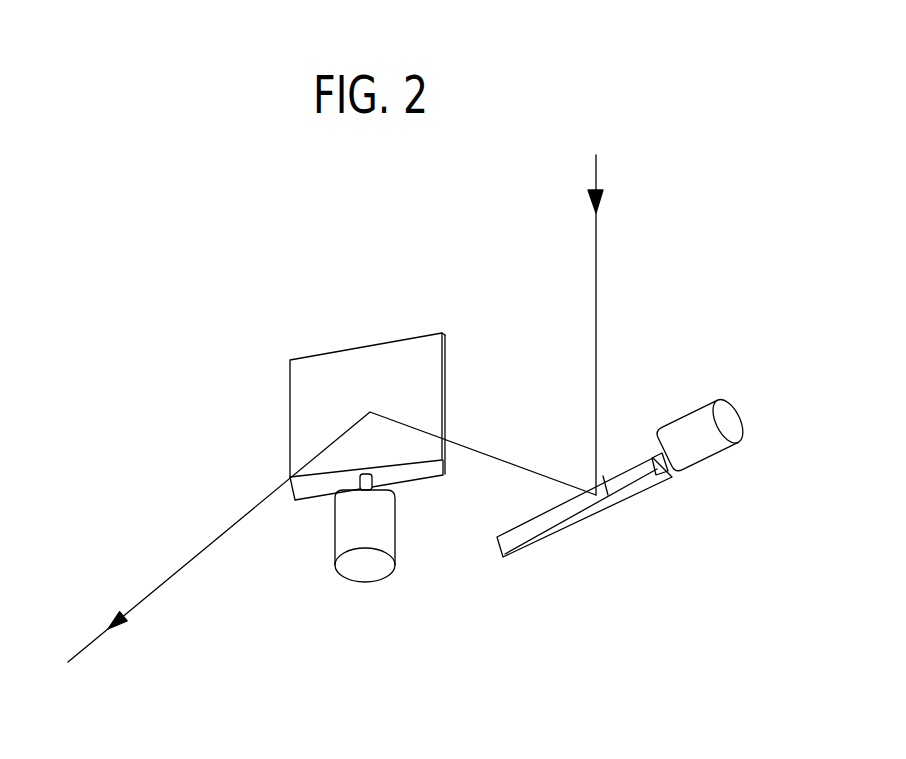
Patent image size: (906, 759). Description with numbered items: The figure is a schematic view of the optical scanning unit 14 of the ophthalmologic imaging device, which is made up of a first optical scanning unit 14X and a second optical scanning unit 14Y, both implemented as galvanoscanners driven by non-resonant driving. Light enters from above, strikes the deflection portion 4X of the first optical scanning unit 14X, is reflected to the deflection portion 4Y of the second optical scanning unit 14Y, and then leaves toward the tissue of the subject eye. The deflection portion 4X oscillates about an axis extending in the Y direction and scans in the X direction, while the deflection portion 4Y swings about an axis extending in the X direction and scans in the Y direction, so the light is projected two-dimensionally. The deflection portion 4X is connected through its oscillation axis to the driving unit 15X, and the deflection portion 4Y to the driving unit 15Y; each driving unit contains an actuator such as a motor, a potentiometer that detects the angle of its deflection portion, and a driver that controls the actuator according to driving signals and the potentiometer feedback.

The optical scanning unit 14 is at (166, 222).
The first optical scanning unit 14X is at (634, 547).
The second optical scanning unit 14Y is at (252, 418).
The deflection portion 4X is at (574, 530).
The deflection portion 4Y is at (320, 368).
The driving unit 15X is at (713, 457).
The driving unit 15Y is at (372, 568).